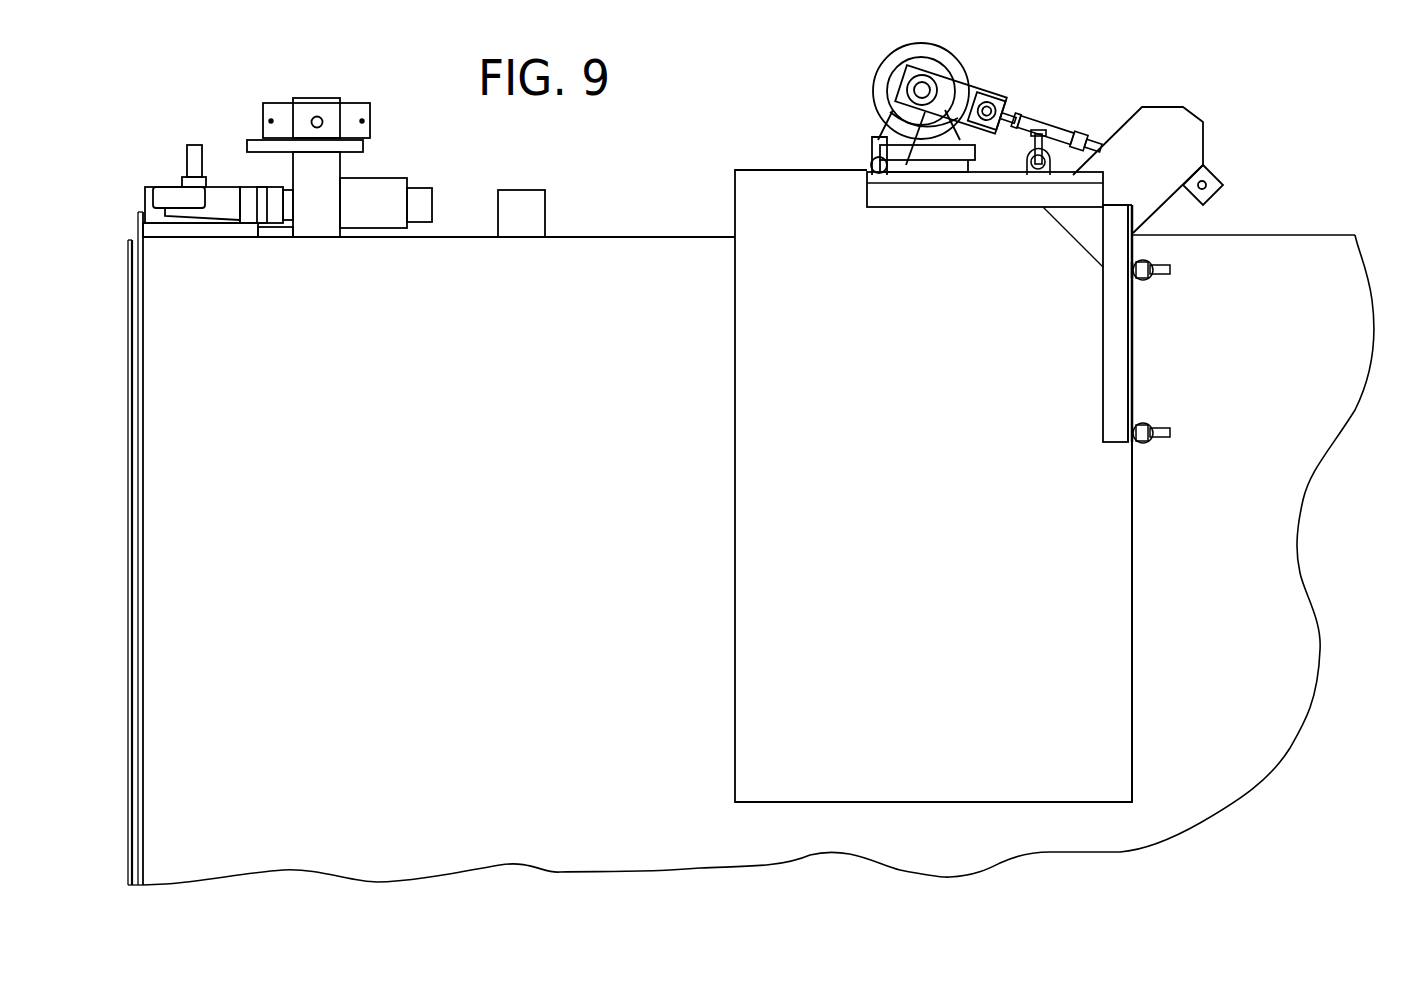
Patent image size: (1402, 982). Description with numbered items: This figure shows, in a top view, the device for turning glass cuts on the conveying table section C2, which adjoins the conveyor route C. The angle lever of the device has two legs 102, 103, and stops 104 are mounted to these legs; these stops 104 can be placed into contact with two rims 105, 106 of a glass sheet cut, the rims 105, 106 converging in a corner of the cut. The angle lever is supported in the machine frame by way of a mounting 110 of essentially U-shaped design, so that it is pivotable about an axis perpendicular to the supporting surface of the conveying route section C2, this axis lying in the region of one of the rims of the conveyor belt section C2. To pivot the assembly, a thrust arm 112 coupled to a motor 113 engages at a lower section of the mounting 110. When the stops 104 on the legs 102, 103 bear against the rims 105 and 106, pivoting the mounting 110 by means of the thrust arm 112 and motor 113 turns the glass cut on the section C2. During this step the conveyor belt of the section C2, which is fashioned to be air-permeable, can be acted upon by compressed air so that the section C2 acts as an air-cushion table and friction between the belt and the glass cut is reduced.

The leg 102 is at (986, 198).
The leg 103 is at (1108, 355).
The stops 104 is at (1148, 282).
The rim 105 is at (1132, 506).
The rim 106 is at (770, 170).
The mounting 110 is at (1182, 150).
The thrust arm 112 is at (1068, 130).
The motor 113 is at (955, 55).
The cover C is at (143, 528).
The conveying table section C2 is at (128, 528).